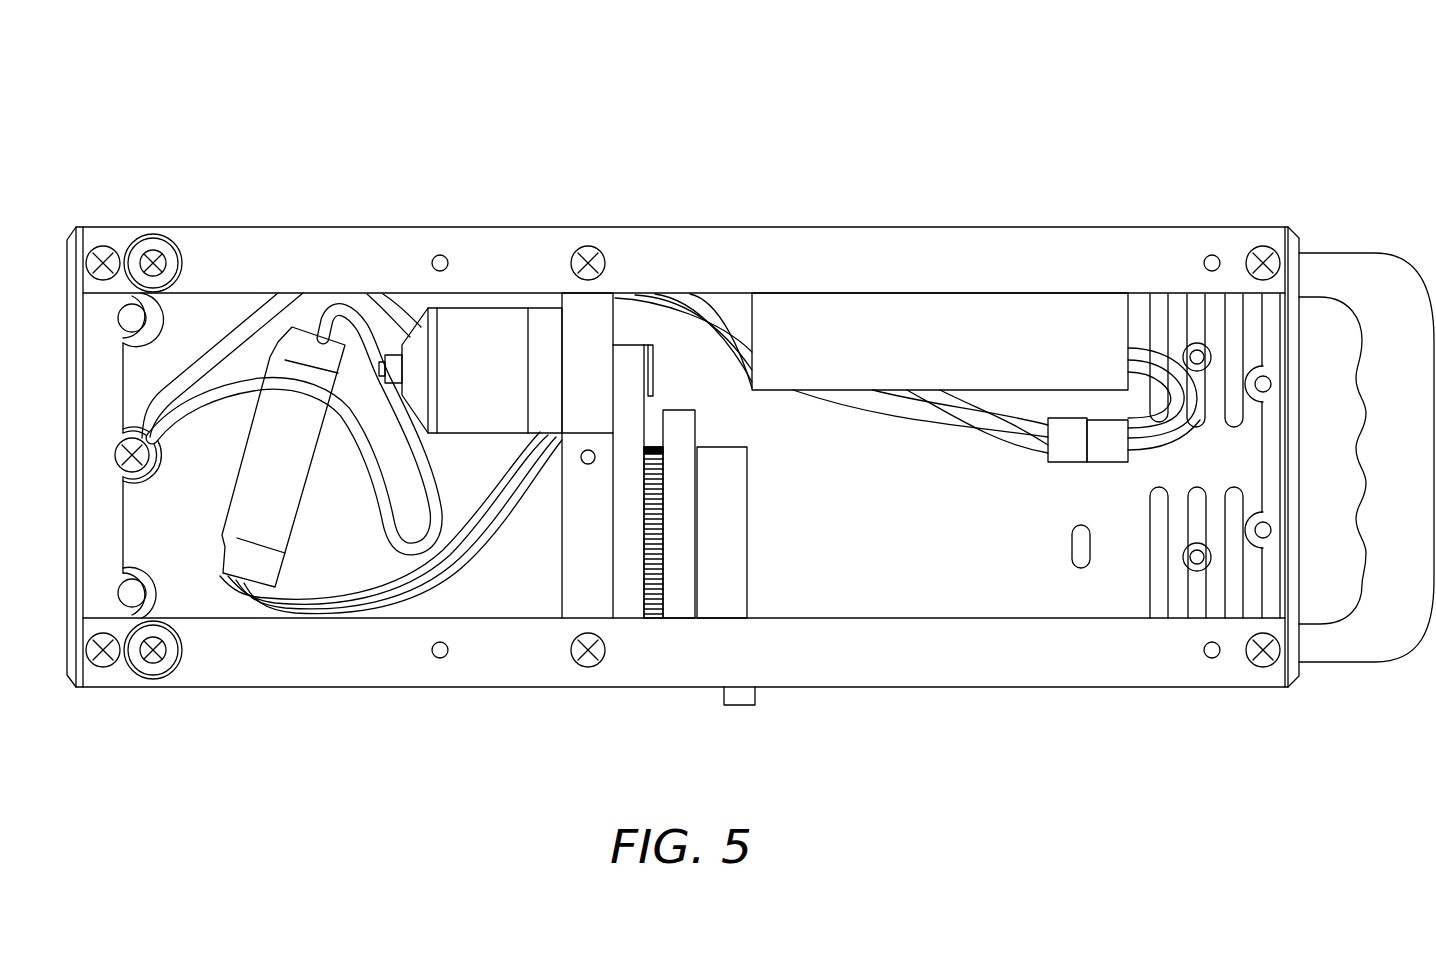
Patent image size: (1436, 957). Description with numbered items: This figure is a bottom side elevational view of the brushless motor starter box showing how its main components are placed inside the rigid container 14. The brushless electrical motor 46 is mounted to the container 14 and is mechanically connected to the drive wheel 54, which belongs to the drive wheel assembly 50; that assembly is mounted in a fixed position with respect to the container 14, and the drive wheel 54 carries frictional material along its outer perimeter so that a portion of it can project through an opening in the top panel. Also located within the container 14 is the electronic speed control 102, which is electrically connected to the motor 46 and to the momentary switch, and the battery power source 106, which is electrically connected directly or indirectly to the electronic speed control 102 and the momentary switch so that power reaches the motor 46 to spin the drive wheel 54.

The rigid container 14 is at (1198, 227).
The brushless electrical motor 46 is at (474, 348).
The drive wheel assembly 50 is at (636, 378).
The drive wheel 54 is at (677, 582).
The electronic speed control (ESC) 102 is at (302, 372).
The battery power source 106 is at (933, 323).